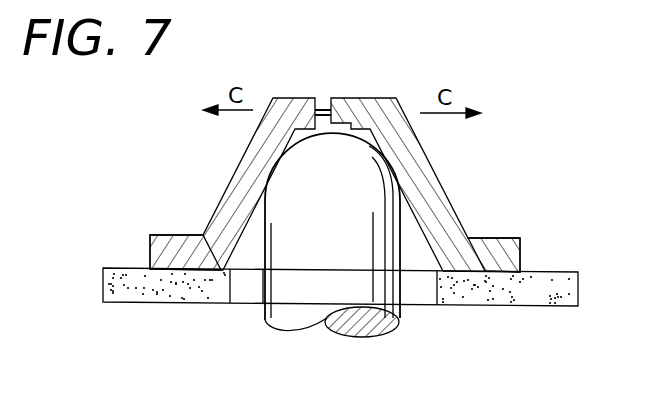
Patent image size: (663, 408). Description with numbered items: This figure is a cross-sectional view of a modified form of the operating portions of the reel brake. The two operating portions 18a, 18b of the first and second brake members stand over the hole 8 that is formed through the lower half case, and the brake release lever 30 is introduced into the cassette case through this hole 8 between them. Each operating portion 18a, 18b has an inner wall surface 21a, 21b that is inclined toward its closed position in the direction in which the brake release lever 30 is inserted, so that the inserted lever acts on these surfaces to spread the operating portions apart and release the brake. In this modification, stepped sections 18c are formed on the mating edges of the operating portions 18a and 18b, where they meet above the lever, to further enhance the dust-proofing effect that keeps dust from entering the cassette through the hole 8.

The hole 8 is at (233, 290).
The operating portion 18a is at (425, 185).
The operating portion 18b is at (217, 184).
The stepped sections 18c is at (320, 111).
The inner wall surface 21a is at (240, 229).
The inner wall surface 21b is at (421, 223).
The brake release lever 30 is at (383, 297).